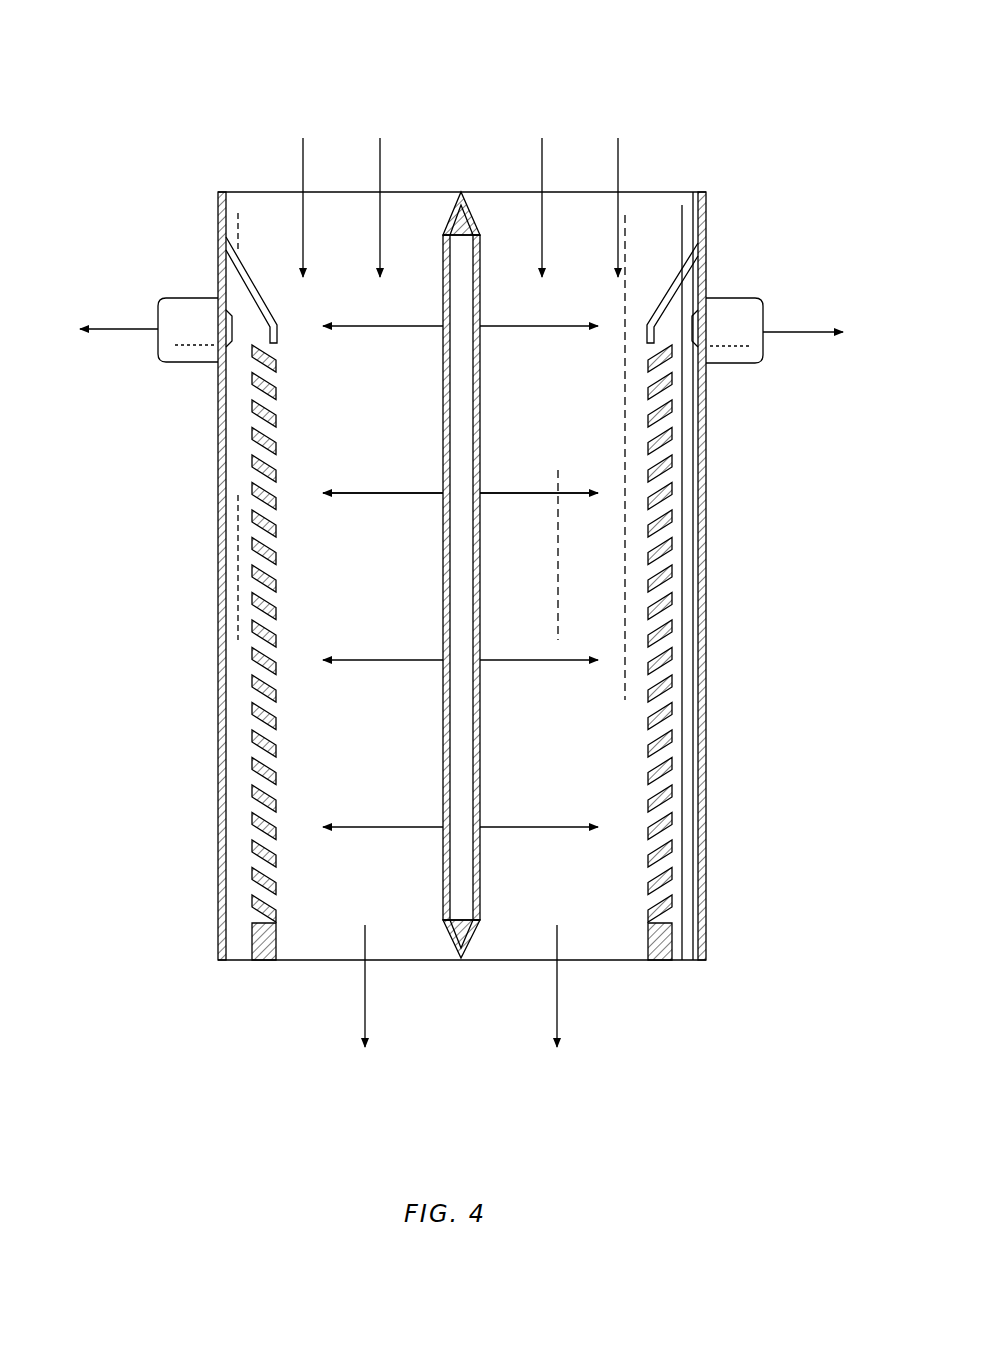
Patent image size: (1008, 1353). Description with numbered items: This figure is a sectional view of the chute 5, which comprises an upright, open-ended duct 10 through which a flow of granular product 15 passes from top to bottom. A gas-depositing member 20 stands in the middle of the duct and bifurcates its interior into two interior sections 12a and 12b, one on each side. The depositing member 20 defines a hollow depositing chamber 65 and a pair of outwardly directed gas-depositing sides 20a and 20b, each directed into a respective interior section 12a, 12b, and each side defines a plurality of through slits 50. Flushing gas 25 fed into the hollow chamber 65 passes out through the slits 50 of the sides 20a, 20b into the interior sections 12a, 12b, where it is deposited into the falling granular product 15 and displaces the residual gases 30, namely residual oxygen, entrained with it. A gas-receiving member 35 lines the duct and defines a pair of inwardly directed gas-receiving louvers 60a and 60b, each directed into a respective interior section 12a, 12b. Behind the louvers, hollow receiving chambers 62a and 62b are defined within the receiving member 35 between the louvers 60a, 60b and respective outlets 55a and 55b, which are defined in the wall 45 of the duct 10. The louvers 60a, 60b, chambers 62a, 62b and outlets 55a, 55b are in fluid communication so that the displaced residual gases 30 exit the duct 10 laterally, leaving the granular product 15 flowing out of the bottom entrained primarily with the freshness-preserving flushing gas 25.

The chute 5 is at (777, 50).
The duct 10 is at (458, 602).
The interior section 12a is at (587, 963).
The interior section 12b is at (337, 963).
The granular product 15 is at (380, 160).
The gas-depositing member 20 is at (459, 523).
The gas-depositing side 20a is at (480, 513).
The gas-depositing side 20b is at (440, 577).
The flushing gas 25 is at (387, 327).
The residual gases 30 is at (130, 333).
The gas-receiving member 35 is at (690, 681).
The wall 45 is at (708, 210).
The through slits 50 is at (453, 497).
The outlet 55a is at (730, 298).
The outlet 55b is at (195, 298).
The gas-receiving louver 60a is at (660, 587).
The gas-receiving louver 60b is at (247, 680).
The receiving chamber 62a is at (687, 643).
The receiving chamber 62b is at (237, 563).
The hollow depositing chamber 65 is at (472, 213).